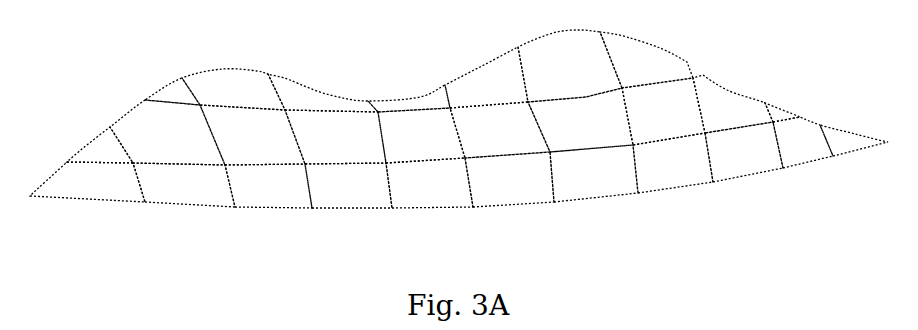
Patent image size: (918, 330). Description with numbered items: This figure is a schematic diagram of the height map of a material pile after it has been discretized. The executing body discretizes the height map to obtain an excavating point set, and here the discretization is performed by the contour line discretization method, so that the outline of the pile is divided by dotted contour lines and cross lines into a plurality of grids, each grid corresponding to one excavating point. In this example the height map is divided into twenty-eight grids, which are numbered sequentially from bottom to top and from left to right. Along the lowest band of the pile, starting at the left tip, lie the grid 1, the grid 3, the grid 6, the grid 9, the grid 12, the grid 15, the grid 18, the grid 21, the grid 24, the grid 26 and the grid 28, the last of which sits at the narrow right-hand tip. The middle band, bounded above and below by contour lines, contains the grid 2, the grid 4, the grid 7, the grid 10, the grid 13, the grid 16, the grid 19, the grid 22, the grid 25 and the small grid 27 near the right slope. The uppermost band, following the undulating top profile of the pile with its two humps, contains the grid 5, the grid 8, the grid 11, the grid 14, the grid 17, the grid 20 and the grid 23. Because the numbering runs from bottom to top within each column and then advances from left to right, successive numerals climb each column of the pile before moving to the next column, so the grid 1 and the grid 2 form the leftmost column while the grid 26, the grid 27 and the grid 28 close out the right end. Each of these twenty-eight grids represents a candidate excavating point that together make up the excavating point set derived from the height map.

The grid 1 is at (87, 182).
The grid 2 is at (100, 145).
The grid 3 is at (184, 185).
The grid 4 is at (167, 132).
The grid 5 is at (172, 91).
The grid 6 is at (268, 186).
The grid 7 is at (252, 135).
The grid 8 is at (233, 89).
The grid 9 is at (348, 185).
The grid 10 is at (335, 137).
The grid 11 is at (323, 93).
The grid 12 is at (429, 183).
The grid 13 is at (421, 135).
The grid 14 is at (409, 99).
The grid 15 is at (509, 179).
The grid 16 is at (500, 130).
The grid 17 is at (486, 77).
The grid 18 is at (594, 173).
The grid 19 is at (580, 120).
The grid 20 is at (570, 66).
The grid 21 is at (673, 163).
The grid 22 is at (663, 111).
The grid 23 is at (646, 60).
The grid 24 is at (744, 152).
The grid 25 is at (733, 104).
The grid 26 is at (803, 142).
The grid 27 is at (782, 112).
The grid 28 is at (854, 140).